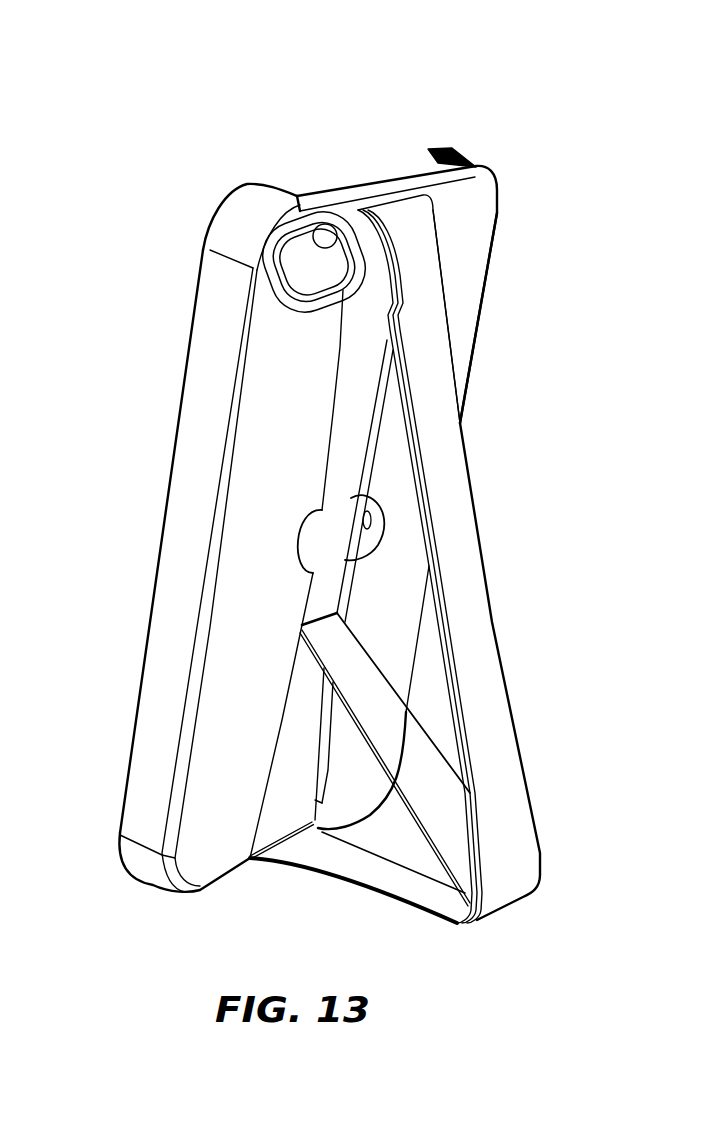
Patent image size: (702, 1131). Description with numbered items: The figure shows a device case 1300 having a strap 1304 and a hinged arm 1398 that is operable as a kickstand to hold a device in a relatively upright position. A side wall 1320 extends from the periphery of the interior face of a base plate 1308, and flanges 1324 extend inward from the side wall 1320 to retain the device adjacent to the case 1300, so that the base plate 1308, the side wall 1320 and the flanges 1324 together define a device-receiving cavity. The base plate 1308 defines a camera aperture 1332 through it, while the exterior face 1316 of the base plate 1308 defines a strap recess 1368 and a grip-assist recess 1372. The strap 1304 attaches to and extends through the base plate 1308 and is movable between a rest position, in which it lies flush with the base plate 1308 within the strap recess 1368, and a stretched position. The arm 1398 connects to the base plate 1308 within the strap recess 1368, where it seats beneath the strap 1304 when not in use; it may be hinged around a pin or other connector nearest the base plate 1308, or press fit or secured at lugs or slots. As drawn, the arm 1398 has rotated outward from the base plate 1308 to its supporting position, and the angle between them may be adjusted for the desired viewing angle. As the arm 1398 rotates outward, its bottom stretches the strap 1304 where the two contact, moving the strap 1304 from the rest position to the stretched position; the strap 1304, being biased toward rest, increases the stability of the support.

The device case 1300 is at (176, 110).
The strap 1304 is at (460, 587).
The base plate 1308 is at (465, 263).
The exterior face 1316 is at (303, 494).
The side wall 1320 is at (208, 430).
The flanges 1324 is at (432, 150).
The camera aperture 1332 is at (327, 226).
The strap recess 1368 is at (330, 413).
The grip-assist recess 1372 is at (373, 540).
The hinged arm 1398 is at (443, 793).